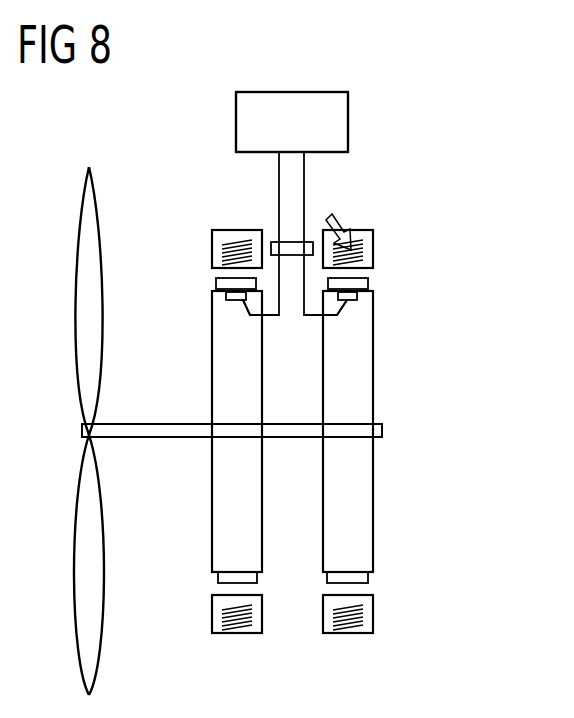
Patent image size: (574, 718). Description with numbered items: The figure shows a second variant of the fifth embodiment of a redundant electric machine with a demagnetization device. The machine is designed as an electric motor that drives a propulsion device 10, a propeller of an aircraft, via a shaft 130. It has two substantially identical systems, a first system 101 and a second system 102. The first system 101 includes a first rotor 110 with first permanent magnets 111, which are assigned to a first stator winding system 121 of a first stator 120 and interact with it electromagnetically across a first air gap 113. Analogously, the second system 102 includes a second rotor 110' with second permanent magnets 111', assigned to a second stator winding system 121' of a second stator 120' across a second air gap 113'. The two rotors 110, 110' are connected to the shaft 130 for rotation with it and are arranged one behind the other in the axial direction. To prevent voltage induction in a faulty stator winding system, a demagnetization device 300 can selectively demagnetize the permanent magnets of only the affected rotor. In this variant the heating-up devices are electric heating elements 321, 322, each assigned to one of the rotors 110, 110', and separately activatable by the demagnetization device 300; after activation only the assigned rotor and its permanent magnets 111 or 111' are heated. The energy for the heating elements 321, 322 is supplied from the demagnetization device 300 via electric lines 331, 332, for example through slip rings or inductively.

The propulsion device 10 is at (85, 560).
The first system 101 is at (170, 190).
The second system 102 is at (465, 186).
The first rotor 110 is at (200, 431).
The second rotor 110' is at (388, 431).
The first permanent magnets 111 is at (200, 430).
The second permanent magnets 111' is at (387, 431).
The first air gap 113 is at (180, 446).
The second air gap 113' is at (430, 438).
The first stator 120 is at (224, 434).
The second stator 120' is at (362, 434).
The first stator winding system 121 is at (207, 413).
The second stator winding system 121' is at (414, 423).
The shaft 130 is at (382, 432).
The demagnetization device 300 is at (348, 122).
The first heating-up device 321 is at (235, 302).
The second heating-up device 322 is at (352, 302).
The electric line 331 is at (271, 318).
The electric line 332 is at (314, 318).